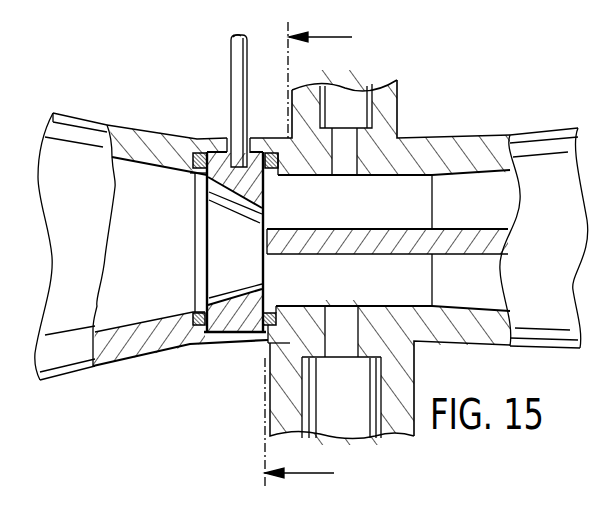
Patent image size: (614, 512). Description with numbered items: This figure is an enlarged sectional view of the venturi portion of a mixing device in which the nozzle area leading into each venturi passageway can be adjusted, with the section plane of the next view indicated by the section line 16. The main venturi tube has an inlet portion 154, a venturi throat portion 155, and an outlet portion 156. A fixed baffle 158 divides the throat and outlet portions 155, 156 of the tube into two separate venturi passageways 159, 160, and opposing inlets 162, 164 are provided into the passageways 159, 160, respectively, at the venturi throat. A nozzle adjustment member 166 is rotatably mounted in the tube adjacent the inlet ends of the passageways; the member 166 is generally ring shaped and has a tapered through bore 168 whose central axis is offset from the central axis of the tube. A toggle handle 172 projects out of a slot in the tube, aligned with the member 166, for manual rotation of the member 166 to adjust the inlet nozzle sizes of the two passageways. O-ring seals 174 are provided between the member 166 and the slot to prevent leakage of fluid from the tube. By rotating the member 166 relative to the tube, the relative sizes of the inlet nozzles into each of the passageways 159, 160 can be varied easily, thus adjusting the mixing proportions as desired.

The section line 16- 16 is at (324, 256).
The inlet portion 154 is at (97, 118).
The venturi throat portion 155 is at (387, 157).
The outlet portion 156 is at (527, 133).
The fixed baffle 158 is at (403, 248).
The venturi passageway 159 is at (489, 192).
The venturi passageway 160 is at (489, 273).
The inlet 162 is at (395, 88).
The inlet 164 is at (280, 388).
The nozzle adjustment member 166 is at (228, 326).
The tapered through bore 168 is at (233, 200).
The toggle handle 172 is at (237, 50).
The O-ring seals 174 is at (196, 153).